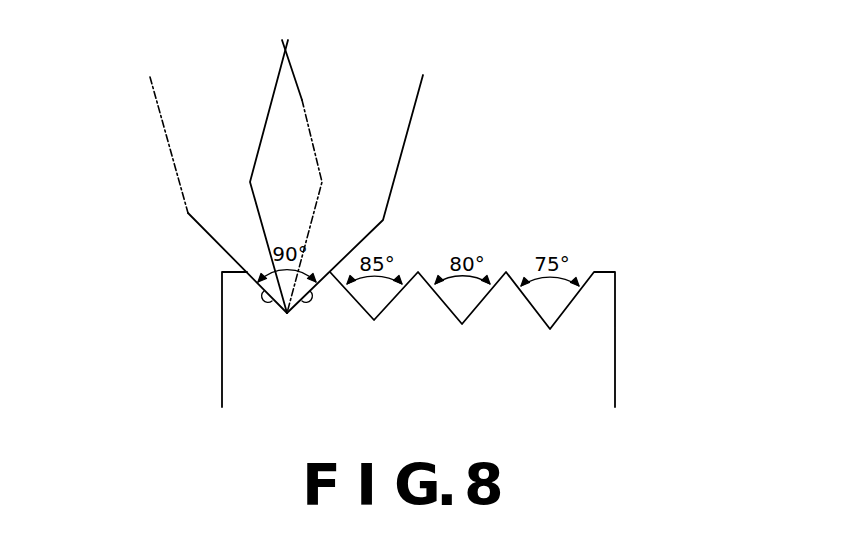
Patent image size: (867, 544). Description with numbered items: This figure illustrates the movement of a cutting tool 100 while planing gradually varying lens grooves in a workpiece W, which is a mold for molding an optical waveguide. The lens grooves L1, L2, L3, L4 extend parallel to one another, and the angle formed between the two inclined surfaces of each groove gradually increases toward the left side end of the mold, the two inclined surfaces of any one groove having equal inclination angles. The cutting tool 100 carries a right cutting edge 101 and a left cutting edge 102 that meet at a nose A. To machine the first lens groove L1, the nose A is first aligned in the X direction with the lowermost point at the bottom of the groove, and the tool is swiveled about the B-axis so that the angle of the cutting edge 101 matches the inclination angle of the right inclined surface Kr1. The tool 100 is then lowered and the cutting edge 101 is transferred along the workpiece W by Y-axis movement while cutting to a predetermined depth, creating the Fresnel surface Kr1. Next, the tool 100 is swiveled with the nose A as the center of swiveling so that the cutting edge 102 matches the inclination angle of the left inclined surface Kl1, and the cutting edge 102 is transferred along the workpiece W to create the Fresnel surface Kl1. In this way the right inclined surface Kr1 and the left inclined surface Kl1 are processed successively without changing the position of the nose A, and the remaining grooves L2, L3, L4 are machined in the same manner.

The cutting tool 100 is at (414, 113).
The cutting edge 101 is at (316, 213).
The cutting edge 102 is at (255, 212).
The workpiece W is at (602, 315).
The inclined surface Kl1 is at (272, 304).
The inclined surface Kr1 is at (298, 298).
The nose A is at (259, 340).
The lens groove L1 is at (283, 389).
The lens groove L2 is at (370, 389).
The lens groove L3 is at (458, 389).
The lens groove L4 is at (547, 389).